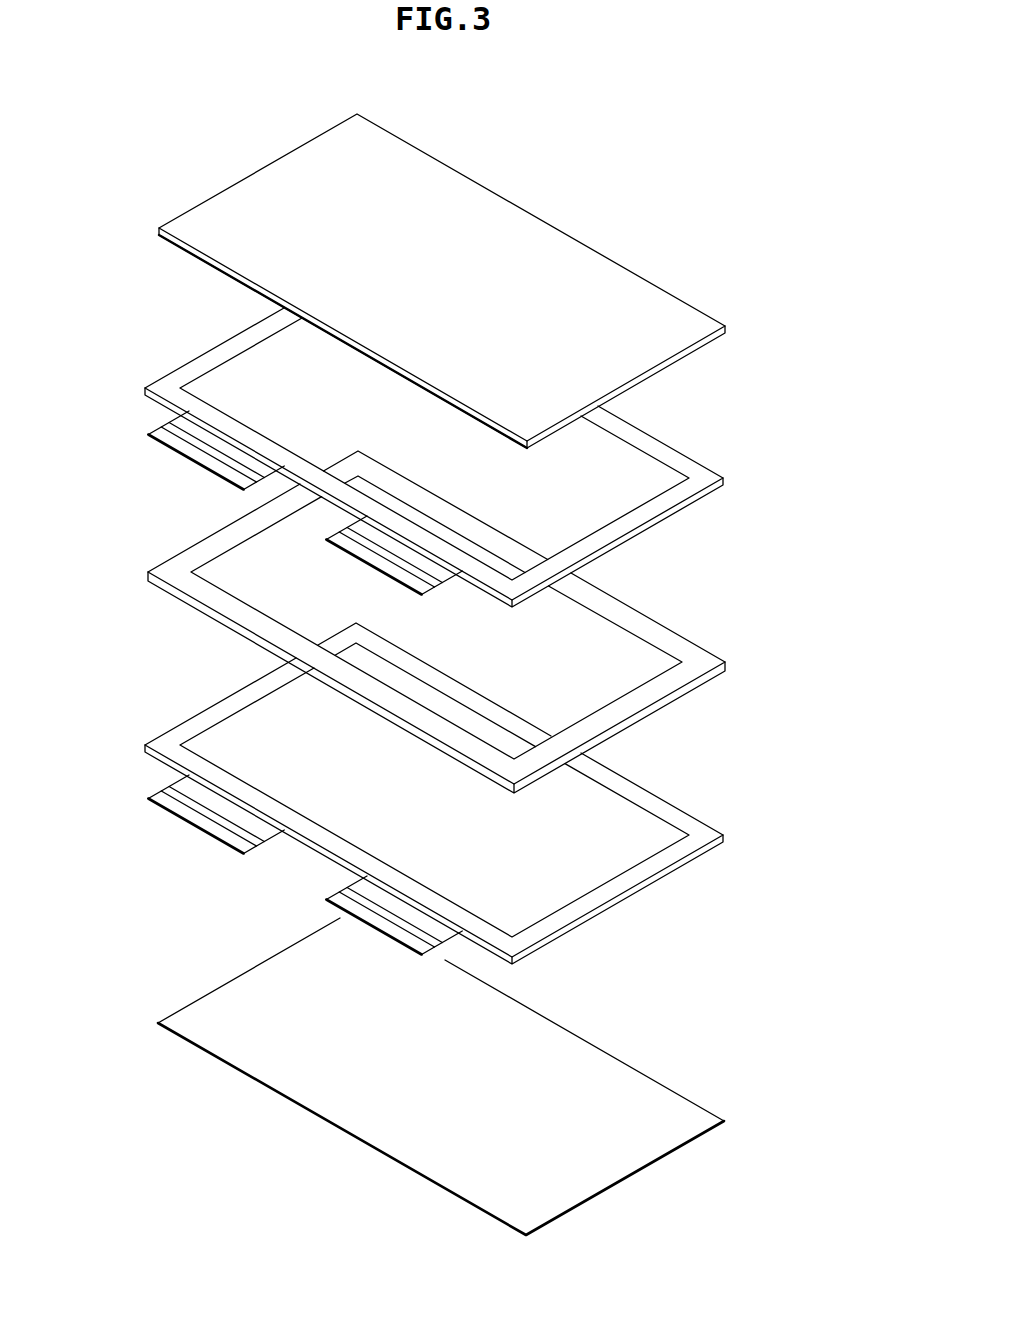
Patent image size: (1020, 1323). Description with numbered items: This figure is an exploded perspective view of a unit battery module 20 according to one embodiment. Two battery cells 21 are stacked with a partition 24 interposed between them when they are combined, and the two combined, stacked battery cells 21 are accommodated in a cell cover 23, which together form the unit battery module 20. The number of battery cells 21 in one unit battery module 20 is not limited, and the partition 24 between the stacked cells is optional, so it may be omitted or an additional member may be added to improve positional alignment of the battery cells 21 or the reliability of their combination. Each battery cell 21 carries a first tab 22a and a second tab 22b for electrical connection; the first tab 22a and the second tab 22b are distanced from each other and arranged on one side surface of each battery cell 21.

The unit battery module 20 is at (132, 156).
The battery cell 21 is at (713, 475).
The first tab 22a is at (327, 541).
The second tab 22b is at (150, 433).
The cell cover 23 is at (713, 324).
The partition 24 is at (715, 660).